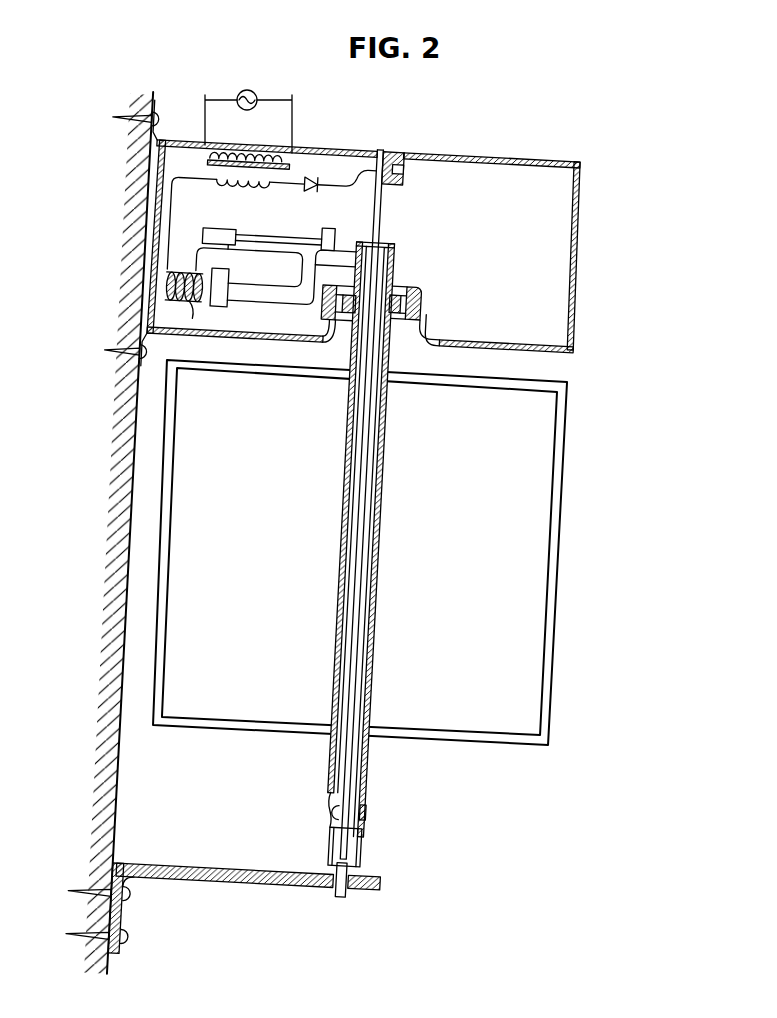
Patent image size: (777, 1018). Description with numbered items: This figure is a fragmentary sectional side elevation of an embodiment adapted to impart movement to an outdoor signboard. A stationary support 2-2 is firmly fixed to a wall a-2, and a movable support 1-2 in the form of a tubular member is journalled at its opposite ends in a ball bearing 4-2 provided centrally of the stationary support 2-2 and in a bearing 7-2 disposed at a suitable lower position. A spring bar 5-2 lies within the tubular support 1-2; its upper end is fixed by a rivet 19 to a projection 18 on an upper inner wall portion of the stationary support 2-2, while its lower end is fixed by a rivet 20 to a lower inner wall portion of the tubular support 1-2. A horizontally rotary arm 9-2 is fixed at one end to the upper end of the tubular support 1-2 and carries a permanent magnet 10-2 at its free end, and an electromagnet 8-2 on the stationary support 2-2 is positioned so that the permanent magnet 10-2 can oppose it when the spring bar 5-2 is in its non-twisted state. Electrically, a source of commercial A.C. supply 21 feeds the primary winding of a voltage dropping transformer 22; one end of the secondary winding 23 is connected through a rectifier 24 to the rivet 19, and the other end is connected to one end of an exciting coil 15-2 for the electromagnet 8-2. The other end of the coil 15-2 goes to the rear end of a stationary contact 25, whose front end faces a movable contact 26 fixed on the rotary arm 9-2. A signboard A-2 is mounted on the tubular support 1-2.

The source of commercial A.C. supply 21 is at (247, 89).
The voltage dropping transformer 22 is at (283, 160).
The secondary winding 23 is at (240, 178).
The rectifier 24 is at (308, 178).
The rivet 19 is at (380, 150).
The projection 18 is at (406, 171).
The stationary contact 25 is at (283, 238).
The movable contact 26 is at (334, 213).
The permanent magnet 10-2 is at (228, 276).
The exciting coil 15-2 is at (166, 288).
The horizontally rotary arm 9-2 is at (262, 290).
The electromagnet 8-2 is at (200, 304).
The ball bearing 4-2 is at (341, 316).
The stationary support 2-2 is at (578, 262).
The spring bar 5-2 is at (370, 447).
The movable support 1-2 is at (378, 516).
The signboard A-2 is at (560, 482).
The wall a-2 is at (122, 500).
The rivet 20 is at (365, 812).
The bearing 7-2 is at (362, 874).